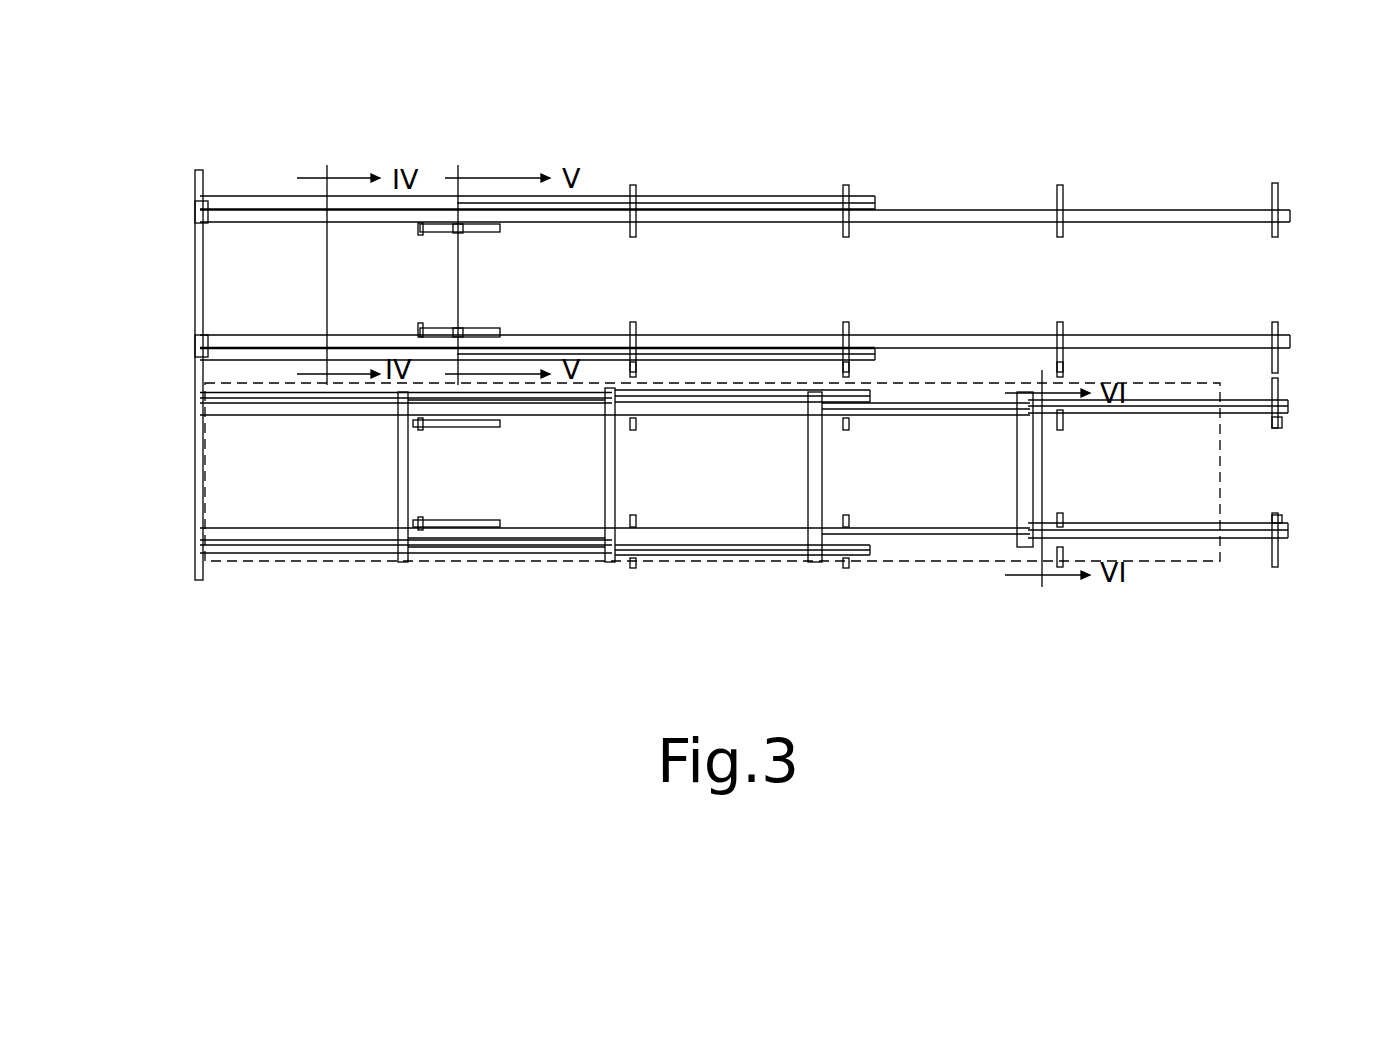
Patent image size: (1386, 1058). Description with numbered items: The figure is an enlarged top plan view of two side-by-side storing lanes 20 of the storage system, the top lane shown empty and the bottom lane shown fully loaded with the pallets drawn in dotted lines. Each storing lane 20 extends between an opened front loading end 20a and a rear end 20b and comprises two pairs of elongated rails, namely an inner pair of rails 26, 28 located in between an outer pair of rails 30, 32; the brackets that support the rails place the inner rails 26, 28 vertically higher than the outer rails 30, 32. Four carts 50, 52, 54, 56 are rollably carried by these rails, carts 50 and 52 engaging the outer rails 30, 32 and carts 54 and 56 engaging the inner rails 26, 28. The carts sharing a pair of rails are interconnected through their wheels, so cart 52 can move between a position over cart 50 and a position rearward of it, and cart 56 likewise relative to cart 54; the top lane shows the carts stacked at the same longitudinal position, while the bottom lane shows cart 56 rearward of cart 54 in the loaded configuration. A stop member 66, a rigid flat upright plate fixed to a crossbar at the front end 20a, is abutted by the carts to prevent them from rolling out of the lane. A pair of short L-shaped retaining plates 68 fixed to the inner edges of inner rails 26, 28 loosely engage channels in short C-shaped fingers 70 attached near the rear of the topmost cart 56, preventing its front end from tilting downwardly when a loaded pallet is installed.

The storing lane 20 is at (1306, 259).
The front loading end 20a is at (195, 248).
The rear end 20b is at (1290, 210).
The inner rail 26 is at (970, 215).
The inner rail 28 is at (938, 342).
The outer rail 30 is at (765, 200).
The outer rail 32 is at (712, 357).
The cart 50 is at (538, 548).
The cart 52 is at (259, 203).
The cart 54 is at (937, 538).
The cart 56 is at (343, 218).
The stop member 66 is at (195, 280).
The retaining plate 68 is at (485, 228).
The finger 70 is at (455, 232).